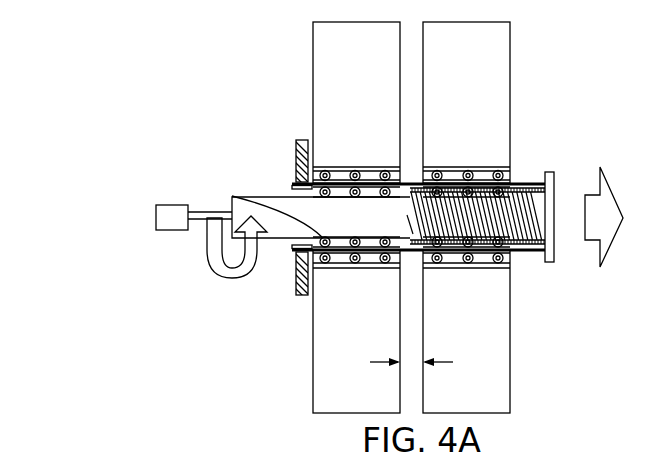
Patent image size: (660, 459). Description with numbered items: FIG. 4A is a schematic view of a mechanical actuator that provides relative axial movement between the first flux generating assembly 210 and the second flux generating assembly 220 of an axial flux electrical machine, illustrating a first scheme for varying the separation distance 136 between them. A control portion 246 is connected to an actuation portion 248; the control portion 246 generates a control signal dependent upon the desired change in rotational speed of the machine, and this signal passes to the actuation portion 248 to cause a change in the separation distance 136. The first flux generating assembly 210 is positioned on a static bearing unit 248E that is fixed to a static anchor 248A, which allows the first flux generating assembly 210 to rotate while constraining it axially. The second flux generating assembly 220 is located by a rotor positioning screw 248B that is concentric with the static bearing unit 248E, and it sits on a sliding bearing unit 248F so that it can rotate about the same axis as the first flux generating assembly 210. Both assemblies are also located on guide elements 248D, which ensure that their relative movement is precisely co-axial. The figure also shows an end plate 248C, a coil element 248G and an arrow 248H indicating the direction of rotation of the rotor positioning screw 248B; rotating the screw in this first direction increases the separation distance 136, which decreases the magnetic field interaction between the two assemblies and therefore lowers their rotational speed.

The actuation portion 248 is at (238, 78).
The static anchor 248A is at (296, 165).
The rotor positioning screw 248B is at (283, 200).
The end plate 248C is at (548, 263).
The guide elements 248D is at (522, 178).
The static bearing unit 248E is at (232, 196).
The sliding bearing unit 248F is at (500, 262).
The spring coil 248G is at (525, 207).
The cable loop direction 248H is at (208, 255).
The control portion 246 is at (156, 218).
The first flux generating assembly 210 is at (342, 23).
The second flux generating assembly 220 is at (460, 23).
The separation distance 136 is at (413, 362).